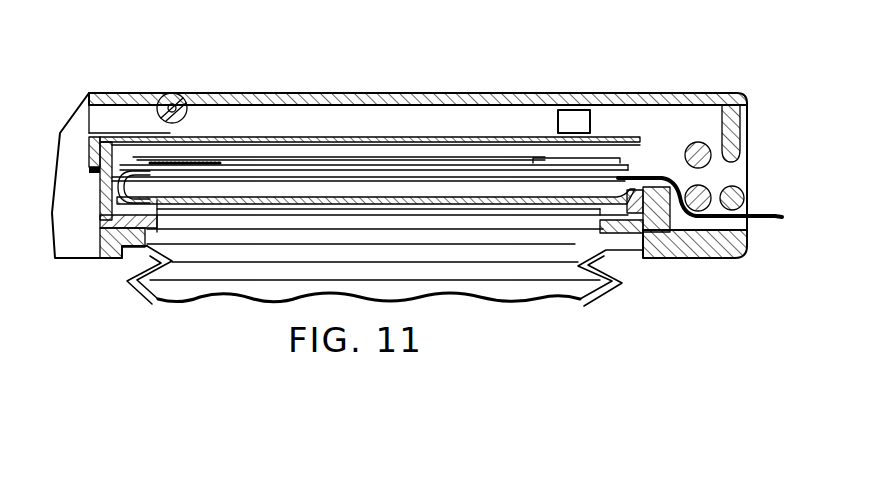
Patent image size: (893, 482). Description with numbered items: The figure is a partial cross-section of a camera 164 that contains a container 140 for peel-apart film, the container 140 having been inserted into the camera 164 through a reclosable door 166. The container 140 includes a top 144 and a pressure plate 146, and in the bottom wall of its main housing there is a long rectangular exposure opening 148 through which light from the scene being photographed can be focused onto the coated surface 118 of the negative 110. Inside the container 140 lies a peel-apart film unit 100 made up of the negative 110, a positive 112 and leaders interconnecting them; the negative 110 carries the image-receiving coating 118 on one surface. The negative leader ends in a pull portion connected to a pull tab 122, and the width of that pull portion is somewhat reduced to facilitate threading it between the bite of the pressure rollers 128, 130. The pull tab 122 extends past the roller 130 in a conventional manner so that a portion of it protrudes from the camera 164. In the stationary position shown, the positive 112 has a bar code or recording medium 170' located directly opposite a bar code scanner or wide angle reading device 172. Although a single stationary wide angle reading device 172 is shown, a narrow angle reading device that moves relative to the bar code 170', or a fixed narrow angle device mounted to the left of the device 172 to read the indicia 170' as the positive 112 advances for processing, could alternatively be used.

The peel-apart film unit 100 is at (634, 166).
The negative 110 is at (445, 224).
The positive 112 is at (391, 156).
The image-receiving coating 118 is at (256, 216).
The pull tab 122 is at (770, 215).
The pressure roller 128 is at (702, 143).
The pressure roller 130 is at (702, 186).
The container 140 is at (233, 131).
The top 144 is at (333, 143).
The pressure plate 146 is at (157, 200).
The exposure opening 148 is at (393, 223).
The camera 164 is at (521, 77).
The reclosable door 166 is at (400, 94).
The bar code or recording medium 170' is at (564, 136).
The bar code scanner or wide angle reading device 172 is at (590, 120).